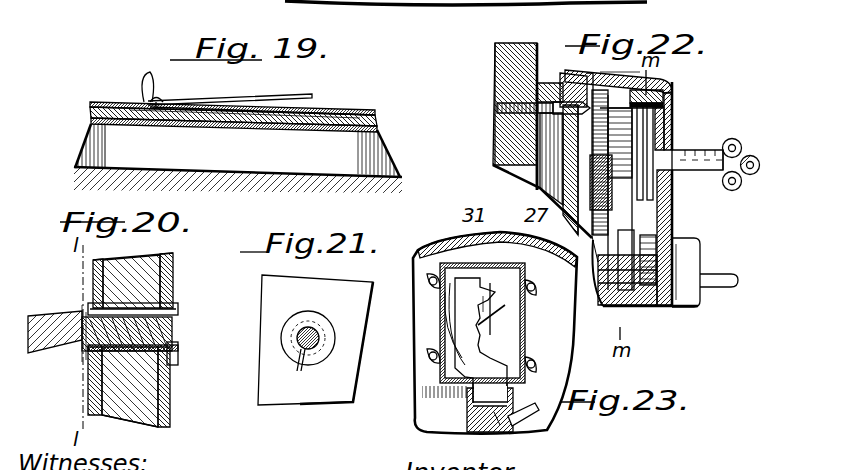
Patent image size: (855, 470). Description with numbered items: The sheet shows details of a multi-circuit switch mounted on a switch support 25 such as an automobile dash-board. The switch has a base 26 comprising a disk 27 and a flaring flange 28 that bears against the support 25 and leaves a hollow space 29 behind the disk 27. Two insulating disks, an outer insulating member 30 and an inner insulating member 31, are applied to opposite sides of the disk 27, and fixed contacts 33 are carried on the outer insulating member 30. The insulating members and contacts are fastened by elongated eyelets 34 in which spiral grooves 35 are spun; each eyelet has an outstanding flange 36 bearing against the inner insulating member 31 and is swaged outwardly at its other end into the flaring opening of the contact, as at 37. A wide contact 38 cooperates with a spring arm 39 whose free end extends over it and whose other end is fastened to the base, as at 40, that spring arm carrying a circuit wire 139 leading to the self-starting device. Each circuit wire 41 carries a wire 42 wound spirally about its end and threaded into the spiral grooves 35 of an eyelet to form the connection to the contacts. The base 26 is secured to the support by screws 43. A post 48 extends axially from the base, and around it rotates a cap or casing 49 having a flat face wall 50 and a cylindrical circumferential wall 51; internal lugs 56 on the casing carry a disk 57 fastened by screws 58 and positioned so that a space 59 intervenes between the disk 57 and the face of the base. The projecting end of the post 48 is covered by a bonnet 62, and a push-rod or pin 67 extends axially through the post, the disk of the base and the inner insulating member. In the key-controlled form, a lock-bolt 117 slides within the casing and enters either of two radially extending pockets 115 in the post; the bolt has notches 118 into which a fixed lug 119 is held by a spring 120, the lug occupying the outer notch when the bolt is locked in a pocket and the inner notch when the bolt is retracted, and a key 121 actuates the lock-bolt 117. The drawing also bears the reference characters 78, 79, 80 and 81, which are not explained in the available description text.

In FIG. 19, the switch support 25 is at (402, 180).
In FIG. 22, the switch support 25 is at (497, 138).
In FIG. 20, the base 26 is at (152, 278).
In FIG. 22, the base 26 is at (582, 88).
In FIG. 19, the disk 27 is at (352, 103).
In FIG. 20, the disk 27 is at (140, 408).
In FIG. 22, the disk 27 is at (573, 210).
In FIG. 19, the flaring flange 28 is at (103, 143).
In FIG. 22, the flaring flange 28 is at (496, 75).
In FIG. 19, the hollow space 29 is at (173, 146).
In FIG. 22, the hollow space 29 is at (540, 168).
In FIG. 19, the outer insulating member 30 is at (105, 101).
In FIG. 20, the outer insulating member 30 is at (170, 396).
In FIG. 22, the outer insulating member 30 is at (593, 238).
In FIG. 19, the inner insulating member 31 is at (293, 132).
In FIG. 20, the inner insulating member 31 is at (88, 396).
In FIG. 21, the inner insulating member 31 is at (315, 340).
In FIG. 22, the inner insulating member 31 is at (560, 183).
In FIG. 19, the fixed contacts 33 is at (212, 116).
In FIG. 20, the elongated eyelets 34 is at (88, 368).
In FIG. 20, the spiral grooves 35 is at (127, 355).
In FIG. 20, the outstanding flange 36 is at (90, 308).
In FIG. 21, the outstanding flange 36 is at (322, 331).
In FIG. 20, the swaged end 37 is at (175, 322).
In FIG. 19, the wide contact 38 is at (292, 104).
In FIG. 19, the spring arm 39 is at (260, 91).
In FIG. 19, the fastening point of spring arm 40 is at (180, 90).
In FIG. 20, the circuit wires 41 is at (47, 332).
In FIG. 21, the circuit wires 41 is at (320, 347).
In FIG. 20, the spirally wound wire 42 is at (178, 348).
In FIG. 22, the screws 43 is at (497, 108).
In FIG. 22, the post 48 is at (643, 293).
In FIG. 23, the post 48 is at (478, 425).
In FIG. 22, the cap or casing 49 is at (672, 85).
In FIG. 22, the face wall 50 is at (667, 207).
In FIG. 23, the face wall 50 is at (527, 325).
In FIG. 22, the cylindrical circumferential wall 51 is at (628, 90).
In FIG. 23, the cylindrical circumferential wall 51 is at (430, 246).
In FIG. 22, the internal lugs 56 is at (655, 109).
In FIG. 22, the disk 57 is at (668, 130).
In FIG. 22, the screws 58 is at (668, 99).
In FIG. 22, the space 59 is at (548, 158).
In FIG. 22, the bonnet 62 is at (686, 260).
In FIG. 22, the push-rod or pin 67 is at (719, 288).
In FIG. 23, the push-rod or pin 67 is at (500, 426).
In FIG. 22, the curved guide 78 is at (583, 253).
In FIG. 22, the spring 79 is at (610, 212).
In FIG. 22, the plunger 80 is at (652, 150).
In FIG. 22, the spring coil 81 is at (612, 178).
In FIG. 23, the radially extending pockets 115 is at (507, 398).
In FIG. 22, the lock-bolt 117 is at (663, 228).
In FIG. 23, the lock-bolt 117 is at (523, 382).
In FIG. 22, the notches 118 is at (660, 150).
In FIG. 23, the notches 118 is at (483, 300).
In FIG. 22, the fixed lug 119 is at (700, 141).
In FIG. 23, the fixed lug 119 is at (508, 300).
In FIG. 23, the spring 120 is at (438, 358).
In FIG. 22, the key 121 is at (785, 204).
In FIG. 23, the key 121 is at (500, 313).
In FIG. 19, the circuit wire 139 is at (153, 88).